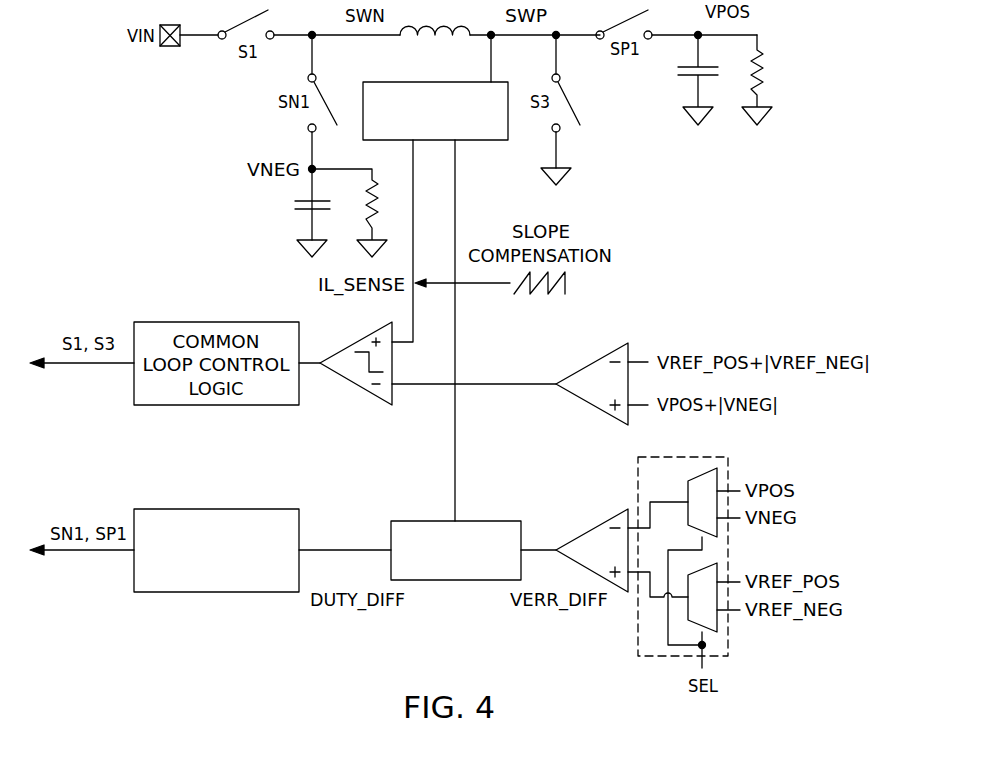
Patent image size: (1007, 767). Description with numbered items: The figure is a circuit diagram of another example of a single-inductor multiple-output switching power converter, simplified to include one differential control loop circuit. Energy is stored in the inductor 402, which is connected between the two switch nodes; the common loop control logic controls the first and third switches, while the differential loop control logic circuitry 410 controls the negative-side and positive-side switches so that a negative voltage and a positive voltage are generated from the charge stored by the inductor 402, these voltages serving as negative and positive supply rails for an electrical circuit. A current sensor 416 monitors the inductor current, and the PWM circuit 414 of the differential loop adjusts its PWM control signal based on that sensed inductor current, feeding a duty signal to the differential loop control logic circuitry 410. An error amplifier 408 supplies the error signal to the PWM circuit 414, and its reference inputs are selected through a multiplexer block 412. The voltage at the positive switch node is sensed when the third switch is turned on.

The inductor 402 is at (438, 24).
The current sensor 416 is at (476, 142).
The differential loop control logic circuitry 410 is at (216, 507).
The reference multiplexer block 412 is at (685, 456).
The PWM circuit 414 is at (425, 521).
The error amplifier 408 is at (592, 522).